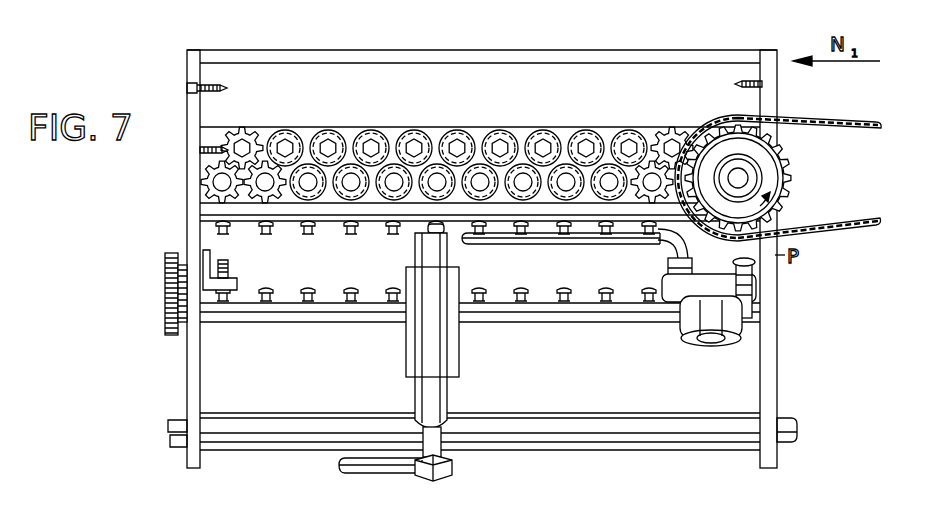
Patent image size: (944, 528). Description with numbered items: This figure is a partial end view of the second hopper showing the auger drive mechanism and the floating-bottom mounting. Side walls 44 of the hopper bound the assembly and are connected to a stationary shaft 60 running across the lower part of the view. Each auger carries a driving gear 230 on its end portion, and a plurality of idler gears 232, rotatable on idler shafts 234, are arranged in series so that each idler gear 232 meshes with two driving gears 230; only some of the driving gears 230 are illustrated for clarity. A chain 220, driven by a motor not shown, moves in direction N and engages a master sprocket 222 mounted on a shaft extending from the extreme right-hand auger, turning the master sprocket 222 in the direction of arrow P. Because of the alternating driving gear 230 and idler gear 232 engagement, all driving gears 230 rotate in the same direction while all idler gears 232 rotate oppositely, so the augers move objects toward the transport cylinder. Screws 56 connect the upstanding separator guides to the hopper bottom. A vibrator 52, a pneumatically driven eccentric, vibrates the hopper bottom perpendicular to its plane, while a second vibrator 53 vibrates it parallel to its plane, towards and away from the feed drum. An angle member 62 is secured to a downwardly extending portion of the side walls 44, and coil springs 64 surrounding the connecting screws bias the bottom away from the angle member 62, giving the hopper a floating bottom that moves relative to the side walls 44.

The idler gear 232 is at (250, 137).
The idler shaft 234 is at (630, 143).
The driving gear 230 is at (258, 194).
The chain 220 is at (812, 122).
The master sprocket 222 is at (792, 172).
The angle member 62 is at (202, 266).
The coil spring 64 is at (232, 263).
The side wall 44 is at (193, 337).
The screw 56 is at (306, 302).
The vibrator 52 is at (460, 346).
The second vibrator 53 is at (668, 320).
The stationary shaft 60 is at (612, 427).